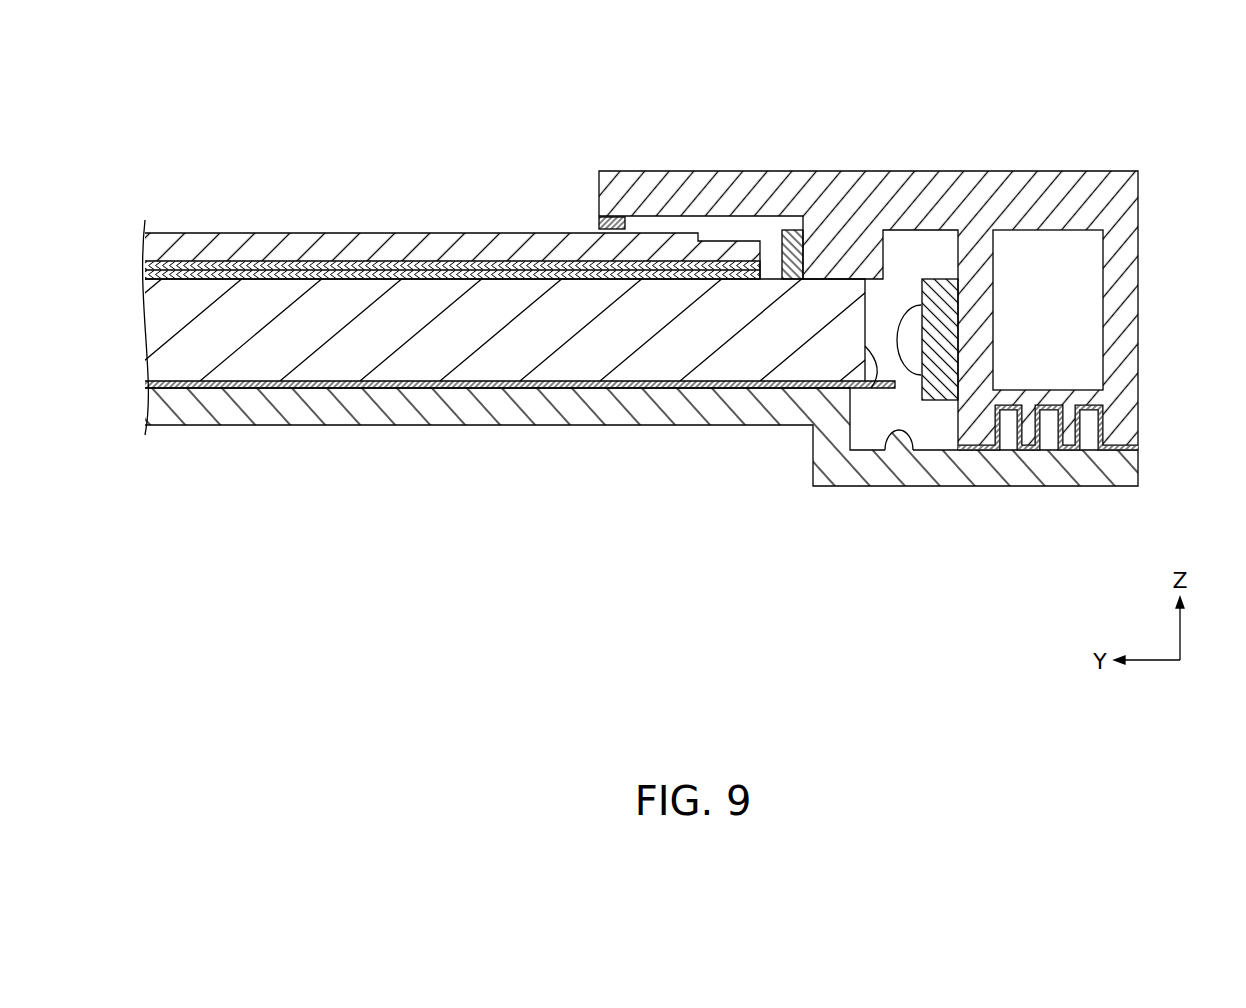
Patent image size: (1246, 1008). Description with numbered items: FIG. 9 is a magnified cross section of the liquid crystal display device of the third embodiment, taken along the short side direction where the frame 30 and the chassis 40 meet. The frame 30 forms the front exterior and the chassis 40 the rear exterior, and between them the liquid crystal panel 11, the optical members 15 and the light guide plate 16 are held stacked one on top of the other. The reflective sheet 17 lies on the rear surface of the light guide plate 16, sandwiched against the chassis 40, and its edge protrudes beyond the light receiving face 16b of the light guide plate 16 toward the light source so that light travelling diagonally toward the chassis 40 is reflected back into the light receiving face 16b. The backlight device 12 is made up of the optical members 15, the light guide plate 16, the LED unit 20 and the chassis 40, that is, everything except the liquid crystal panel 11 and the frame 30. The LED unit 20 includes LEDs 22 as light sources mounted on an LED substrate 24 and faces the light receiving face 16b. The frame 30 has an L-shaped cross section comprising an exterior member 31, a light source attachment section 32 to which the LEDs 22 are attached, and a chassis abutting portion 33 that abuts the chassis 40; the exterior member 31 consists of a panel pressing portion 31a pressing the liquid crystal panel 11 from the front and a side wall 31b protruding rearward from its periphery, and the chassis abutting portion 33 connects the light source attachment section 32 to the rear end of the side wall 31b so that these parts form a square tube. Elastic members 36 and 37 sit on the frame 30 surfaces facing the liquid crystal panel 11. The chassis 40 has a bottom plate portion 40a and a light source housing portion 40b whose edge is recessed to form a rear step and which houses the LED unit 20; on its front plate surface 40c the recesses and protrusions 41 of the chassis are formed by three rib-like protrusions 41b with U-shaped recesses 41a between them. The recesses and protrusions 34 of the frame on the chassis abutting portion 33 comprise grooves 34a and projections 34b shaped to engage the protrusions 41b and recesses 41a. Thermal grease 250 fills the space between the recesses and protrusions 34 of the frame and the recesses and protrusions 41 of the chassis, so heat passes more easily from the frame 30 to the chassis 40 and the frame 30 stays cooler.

The liquid crystal panel 11 is at (262, 245).
The backlight device 12 is at (487, 494).
The optical members 15 is at (490, 277).
The light guide plate 16 is at (693, 347).
The light receiving face 16b is at (871, 388).
The reflective sheet 17 is at (613, 385).
The LED unit 20 is at (883, 120).
The LED 22 is at (902, 320).
The LED substrate 24 is at (940, 315).
The frame 30 is at (837, 200).
The exterior member 31 is at (1130, 68).
The panel pressing portion 31a is at (994, 207).
The side wall 31b is at (1118, 283).
The light source attachment section 32 is at (978, 342).
The chassis abutting portion 33 is at (1022, 398).
The recesses and protrusions of the frame 34 is at (1203, 378).
The groove 34a is at (1060, 409).
The projection 34b is at (1072, 432).
The elastic member 36 is at (608, 229).
The elastic member 37 is at (793, 230).
The chassis 40 is at (418, 426).
The bottom plate portion 40a is at (303, 405).
The light source housing portion 40b is at (923, 462).
The plate surface 40c is at (887, 432).
The recesses and protrusions of the chassis 41 is at (1085, 553).
The recess 41a is at (1033, 447).
The protrusion 41b is at (1048, 438).
The thermal grease 250 is at (1100, 436).